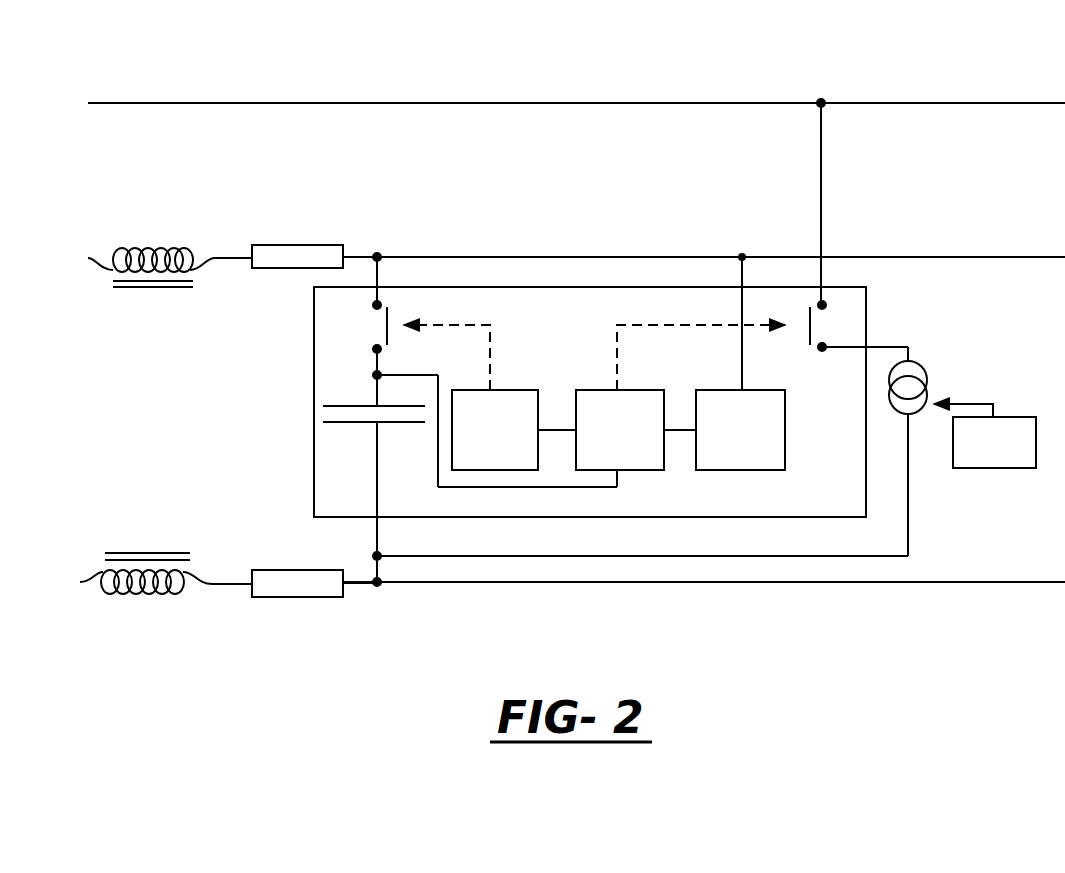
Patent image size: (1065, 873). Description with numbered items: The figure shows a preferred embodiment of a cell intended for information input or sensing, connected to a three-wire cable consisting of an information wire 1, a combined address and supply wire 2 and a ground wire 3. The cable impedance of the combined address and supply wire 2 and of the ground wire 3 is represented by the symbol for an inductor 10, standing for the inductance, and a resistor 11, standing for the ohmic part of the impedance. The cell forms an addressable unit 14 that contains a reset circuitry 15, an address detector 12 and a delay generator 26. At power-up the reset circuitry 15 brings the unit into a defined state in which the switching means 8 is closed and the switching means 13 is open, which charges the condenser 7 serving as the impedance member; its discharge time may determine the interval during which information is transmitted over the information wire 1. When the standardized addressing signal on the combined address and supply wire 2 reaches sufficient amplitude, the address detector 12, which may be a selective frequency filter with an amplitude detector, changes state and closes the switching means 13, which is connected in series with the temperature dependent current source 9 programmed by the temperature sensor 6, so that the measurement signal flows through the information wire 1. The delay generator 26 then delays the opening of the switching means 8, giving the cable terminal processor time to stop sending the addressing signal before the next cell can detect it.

The information wire 1 is at (970, 100).
The combined address and supply wire 2 is at (972, 255).
The ground wire 3 is at (984, 578).
The temperature sensor 6 is at (985, 436).
The condenser 7 is at (360, 426).
The switching means 8 is at (372, 334).
The current source 9 is at (934, 386).
The inductor 10 is at (200, 247).
The resistor 11 is at (360, 244).
The address detector 12 is at (680, 397).
The switching means 13 is at (830, 300).
The addressable unit 14 is at (478, 285).
The reset circuitry 15 is at (740, 430).
The delay generator 26 is at (495, 430).